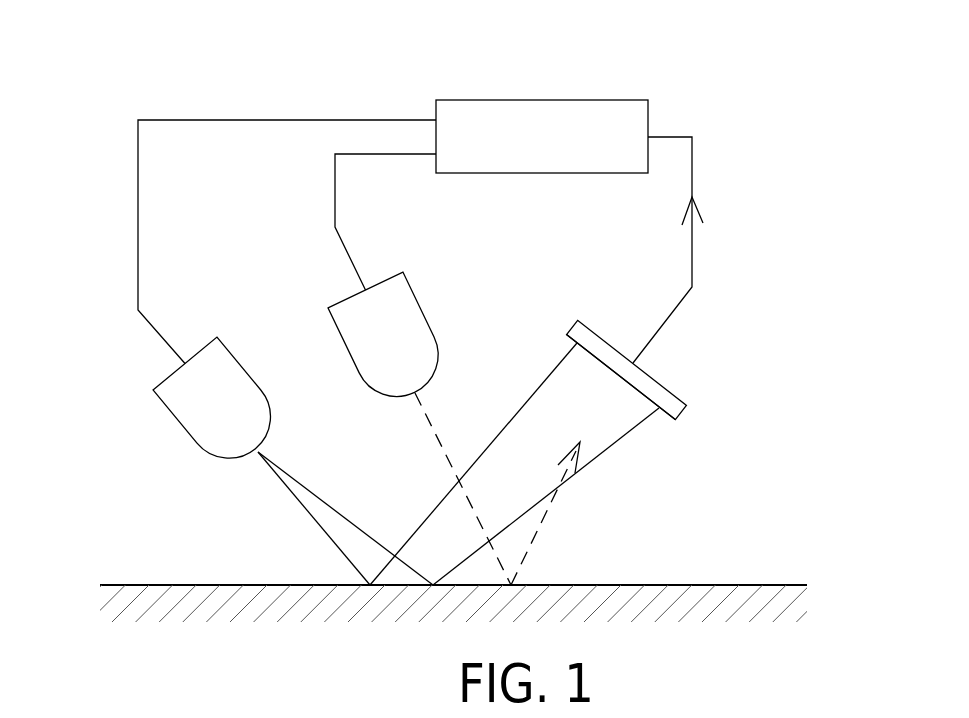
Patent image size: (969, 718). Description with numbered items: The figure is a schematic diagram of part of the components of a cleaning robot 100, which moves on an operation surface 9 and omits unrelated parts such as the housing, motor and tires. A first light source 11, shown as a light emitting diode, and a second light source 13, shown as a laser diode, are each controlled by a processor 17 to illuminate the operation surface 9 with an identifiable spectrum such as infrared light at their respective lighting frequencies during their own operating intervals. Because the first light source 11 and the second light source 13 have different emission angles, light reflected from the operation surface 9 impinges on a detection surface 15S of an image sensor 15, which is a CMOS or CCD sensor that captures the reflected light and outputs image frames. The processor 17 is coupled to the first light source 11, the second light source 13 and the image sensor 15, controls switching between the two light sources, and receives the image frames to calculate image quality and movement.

The cleaning robot 100 is at (155, 41).
The operation surface 9 is at (784, 586).
The first light source 11 is at (182, 424).
The second light source 13 is at (336, 303).
The image sensor 15 is at (670, 388).
The detection surface 15S is at (645, 400).
The processor 17 is at (622, 100).